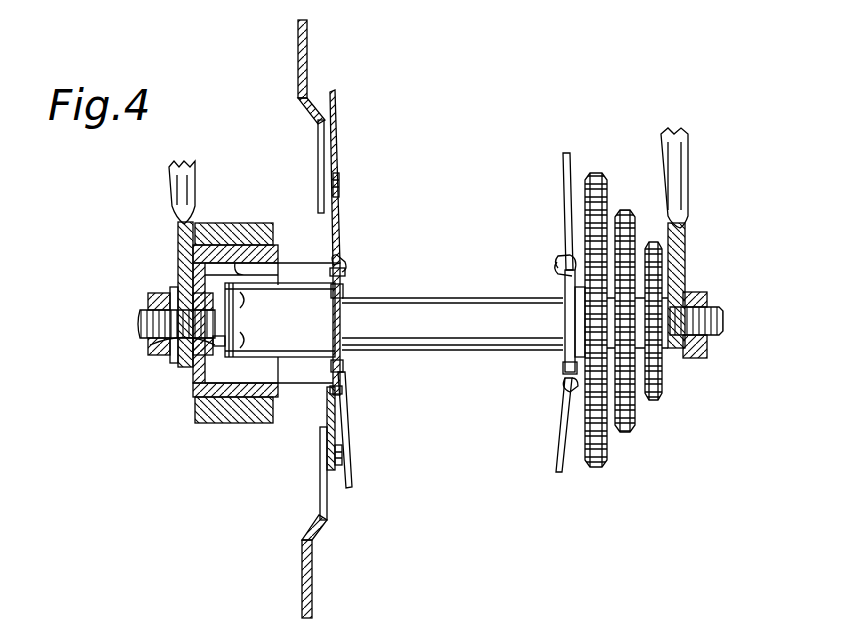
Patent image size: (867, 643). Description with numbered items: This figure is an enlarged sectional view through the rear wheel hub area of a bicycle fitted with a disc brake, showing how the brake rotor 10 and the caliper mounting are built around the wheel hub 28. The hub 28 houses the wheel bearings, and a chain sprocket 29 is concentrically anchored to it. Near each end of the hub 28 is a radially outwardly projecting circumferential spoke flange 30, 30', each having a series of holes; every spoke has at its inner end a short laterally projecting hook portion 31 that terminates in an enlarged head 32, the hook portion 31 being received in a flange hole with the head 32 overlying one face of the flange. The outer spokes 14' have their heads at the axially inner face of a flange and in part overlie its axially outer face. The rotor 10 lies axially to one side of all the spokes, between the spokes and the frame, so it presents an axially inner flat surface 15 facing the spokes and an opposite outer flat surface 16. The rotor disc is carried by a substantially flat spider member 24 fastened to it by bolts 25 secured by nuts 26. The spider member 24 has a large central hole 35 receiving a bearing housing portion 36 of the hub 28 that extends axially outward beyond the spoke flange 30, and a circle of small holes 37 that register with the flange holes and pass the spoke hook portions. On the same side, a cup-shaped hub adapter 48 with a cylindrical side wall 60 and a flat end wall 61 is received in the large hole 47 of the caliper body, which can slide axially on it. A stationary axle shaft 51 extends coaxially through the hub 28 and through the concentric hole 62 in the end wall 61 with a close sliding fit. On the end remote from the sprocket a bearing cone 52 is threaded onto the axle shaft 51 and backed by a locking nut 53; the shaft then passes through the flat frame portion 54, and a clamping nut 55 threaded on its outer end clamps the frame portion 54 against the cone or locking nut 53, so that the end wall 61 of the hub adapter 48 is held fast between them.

The rotor 10 is at (301, 320).
The axially inner flat surface 15 is at (313, 582).
The outer flat surface 16 is at (302, 556).
The spider member 24 is at (336, 440).
The bolts 25 is at (318, 460).
The nuts 26 is at (340, 465).
The outer spokes 14' is at (451, 180).
The hub 28 is at (467, 312).
The chain sprocket 29 is at (610, 445).
The spoke flange 30 is at (364, 243).
The spoke flange 30' is at (539, 238).
The hook portion 31 is at (346, 378).
The enlarged head 32 is at (557, 265).
The large hole 35 is at (346, 292).
The bearing housing portion 36 is at (300, 331).
The small holes 37 is at (347, 269).
The large hole 47 is at (240, 243).
The hub adapter 48 is at (262, 267).
The axle shaft 51 is at (141, 320).
The bearing cone 52 is at (228, 402).
The locking nut 53 is at (200, 368).
The frame portion 54 is at (182, 226).
The clamping nut 55 is at (158, 294).
The cylindrical side wall 60 is at (268, 247).
The end wall 61 is at (190, 356).
The concentric hole 62 is at (152, 347).